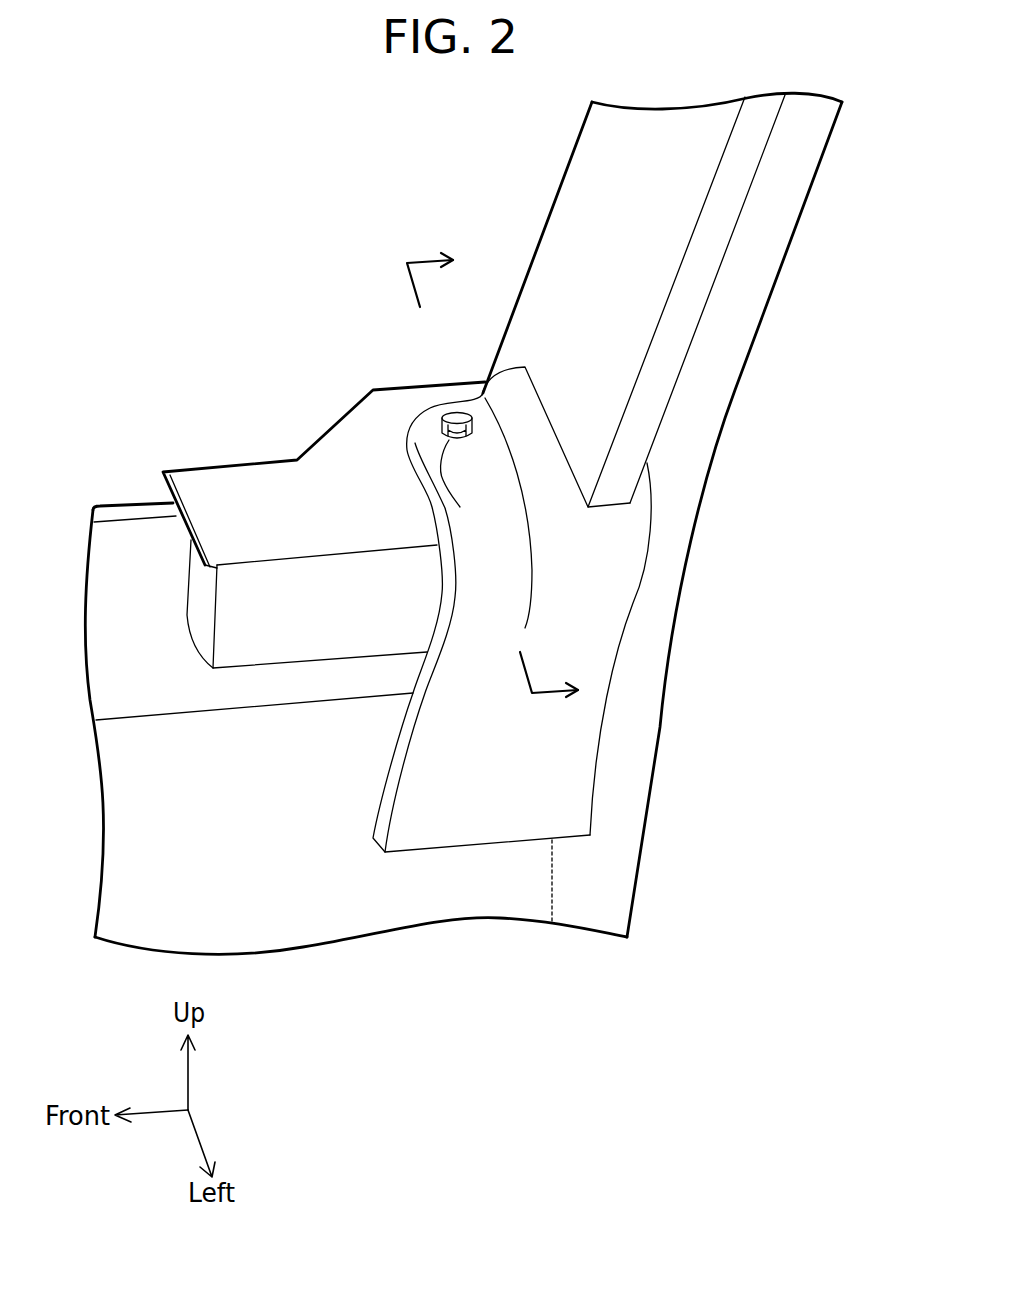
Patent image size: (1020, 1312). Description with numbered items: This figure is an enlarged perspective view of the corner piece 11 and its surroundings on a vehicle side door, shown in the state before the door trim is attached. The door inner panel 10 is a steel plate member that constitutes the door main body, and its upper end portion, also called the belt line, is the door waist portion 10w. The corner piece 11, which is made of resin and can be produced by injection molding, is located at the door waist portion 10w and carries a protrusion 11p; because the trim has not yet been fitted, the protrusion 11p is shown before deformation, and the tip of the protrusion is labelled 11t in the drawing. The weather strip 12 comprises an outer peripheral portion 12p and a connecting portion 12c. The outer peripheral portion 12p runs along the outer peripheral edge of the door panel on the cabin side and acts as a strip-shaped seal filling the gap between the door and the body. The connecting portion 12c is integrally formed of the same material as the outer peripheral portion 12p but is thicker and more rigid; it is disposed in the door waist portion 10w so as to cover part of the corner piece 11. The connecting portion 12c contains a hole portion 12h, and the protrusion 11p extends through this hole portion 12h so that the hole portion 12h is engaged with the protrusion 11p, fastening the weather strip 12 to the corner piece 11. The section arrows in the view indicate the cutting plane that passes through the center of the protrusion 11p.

The door inner panel 10 is at (263, 882).
The door waist portion 10w is at (117, 512).
The corner piece 11 is at (217, 493).
The protrusion 11p is at (433, 425).
The tip of protrusion 11t is at (453, 412).
The weather strip 12 is at (840, 420).
The outer peripheral portion 12p is at (695, 433).
The connecting portion 12c is at (492, 463).
The hole portion 12h is at (460, 507).